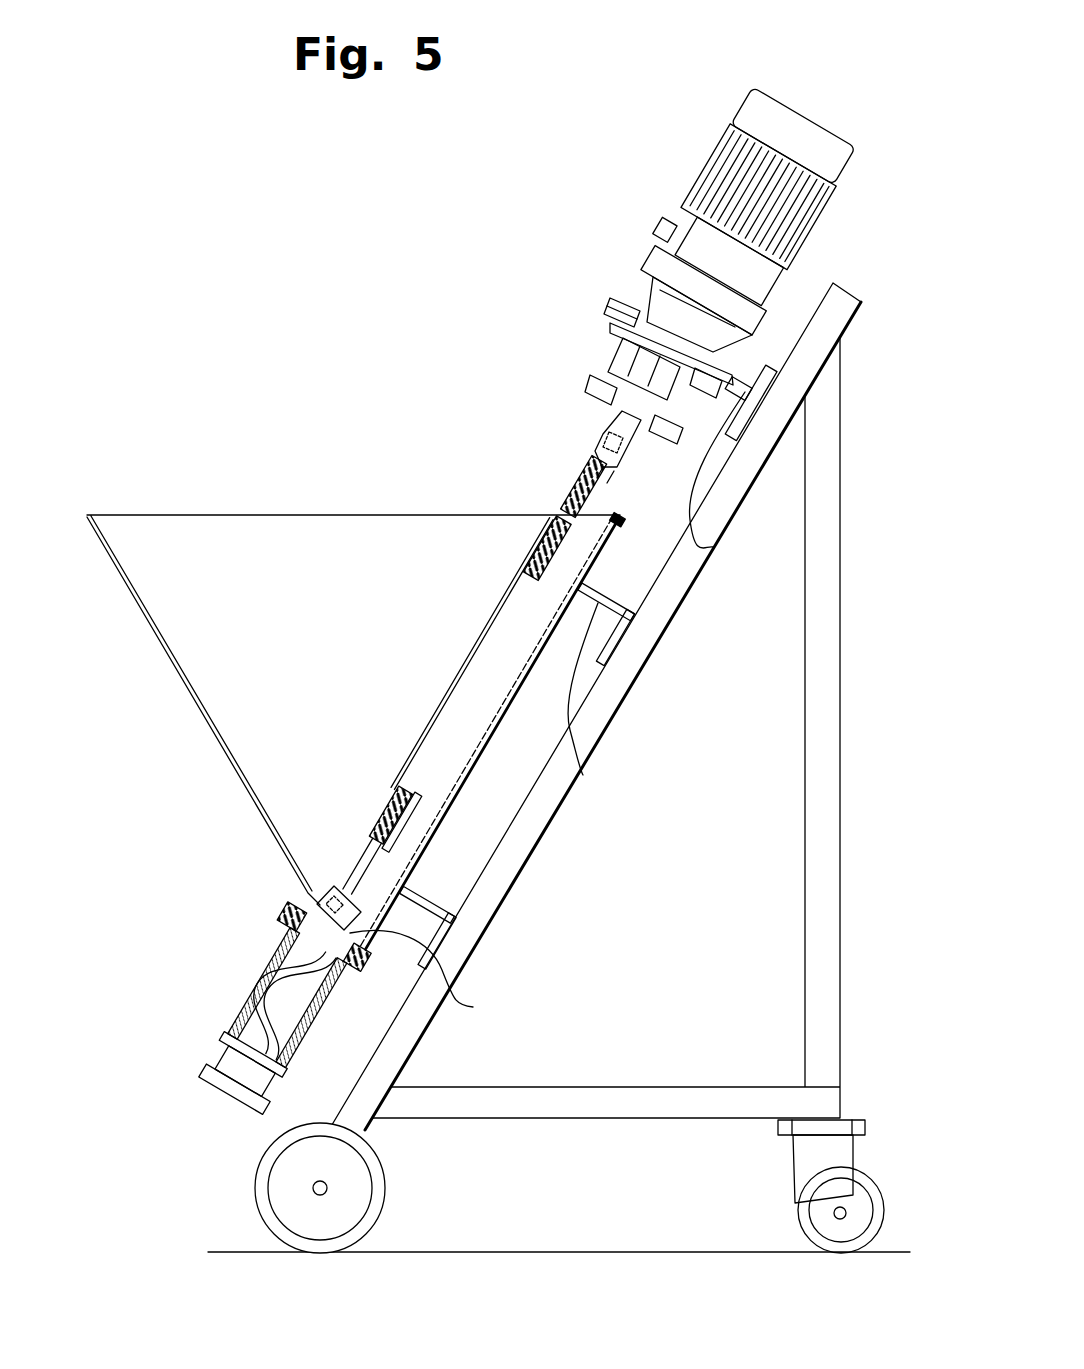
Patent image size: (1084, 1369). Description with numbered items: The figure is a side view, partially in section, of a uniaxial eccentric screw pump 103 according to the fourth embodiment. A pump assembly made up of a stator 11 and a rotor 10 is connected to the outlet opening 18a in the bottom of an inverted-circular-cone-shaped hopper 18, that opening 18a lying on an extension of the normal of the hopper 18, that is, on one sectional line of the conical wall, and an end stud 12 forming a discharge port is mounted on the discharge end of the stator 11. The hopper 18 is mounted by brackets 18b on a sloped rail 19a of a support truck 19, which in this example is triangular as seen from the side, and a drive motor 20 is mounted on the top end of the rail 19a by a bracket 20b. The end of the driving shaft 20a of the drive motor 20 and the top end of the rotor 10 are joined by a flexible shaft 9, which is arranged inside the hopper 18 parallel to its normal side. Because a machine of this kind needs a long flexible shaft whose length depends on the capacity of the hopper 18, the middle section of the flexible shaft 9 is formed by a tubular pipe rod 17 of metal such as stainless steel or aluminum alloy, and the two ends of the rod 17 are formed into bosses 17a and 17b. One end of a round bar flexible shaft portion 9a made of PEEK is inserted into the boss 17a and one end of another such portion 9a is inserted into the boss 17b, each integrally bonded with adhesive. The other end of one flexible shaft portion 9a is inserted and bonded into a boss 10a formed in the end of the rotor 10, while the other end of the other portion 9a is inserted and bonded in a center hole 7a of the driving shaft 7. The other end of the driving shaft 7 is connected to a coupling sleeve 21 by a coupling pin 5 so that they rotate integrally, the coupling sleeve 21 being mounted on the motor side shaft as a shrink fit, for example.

The uniaxial eccentric screw pump 103 is at (366, 348).
The coupling pin 5 is at (620, 362).
The driving shaft 7 is at (603, 433).
The center hole 7a is at (630, 448).
The flexible shaft 9 is at (440, 620).
The round bar flexible shaft portion 9a is at (578, 495).
The rotor 10 is at (297, 905).
The boss 10a is at (318, 877).
The stator 11 is at (265, 980).
The end stud 12 is at (222, 1052).
The tubular pipe rod 17 is at (522, 583).
The boss 17a is at (618, 524).
The boss 17b is at (418, 798).
The hopper 18 is at (172, 515).
The outlet opening 18a is at (473, 1007).
The brackets 18b is at (583, 775).
The support truck 19 is at (843, 376).
The sloped rail 19a is at (627, 677).
The drive motor 20 is at (711, 152).
The driving shaft 20a is at (665, 365).
The bracket 20b is at (713, 547).
The coupling sleeve 21 is at (607, 317).